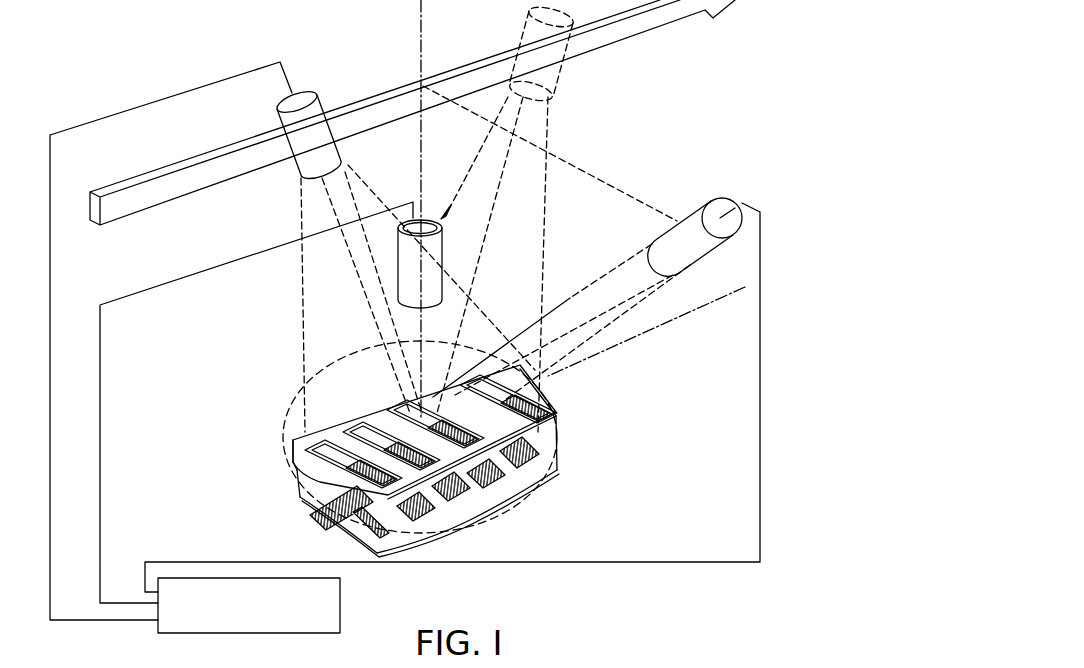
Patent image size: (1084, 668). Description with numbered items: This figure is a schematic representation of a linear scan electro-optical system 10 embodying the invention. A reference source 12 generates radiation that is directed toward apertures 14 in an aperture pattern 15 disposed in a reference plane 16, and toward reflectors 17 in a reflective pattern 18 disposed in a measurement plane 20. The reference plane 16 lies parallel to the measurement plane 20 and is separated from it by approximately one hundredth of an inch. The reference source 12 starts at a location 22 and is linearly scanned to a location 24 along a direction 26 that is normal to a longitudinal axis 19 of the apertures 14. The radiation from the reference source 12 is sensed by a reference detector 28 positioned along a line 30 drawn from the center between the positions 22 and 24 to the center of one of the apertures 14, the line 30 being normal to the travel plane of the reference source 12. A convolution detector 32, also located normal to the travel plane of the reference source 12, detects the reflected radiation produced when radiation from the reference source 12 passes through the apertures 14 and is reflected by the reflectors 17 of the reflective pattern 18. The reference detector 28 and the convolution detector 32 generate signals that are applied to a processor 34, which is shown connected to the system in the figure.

The linear scan electro-optical system 10 is at (718, 99).
The reference source 12 is at (284, 116).
The apertures 14 is at (371, 420).
The aperture pattern 15 is at (346, 399).
The reference plane 16 is at (288, 461).
The reflectors 17 is at (350, 538).
The reflective pattern 18 is at (290, 483).
The longitudinal axis 19 is at (302, 432).
The measurement plane 20 is at (277, 538).
The location 22 is at (281, 170).
The location 24 is at (515, 25).
The direction 26 is at (637, 28).
The reference detector 28 is at (428, 262).
The line 30 is at (421, 157).
The convolution detector 32 is at (696, 252).
The processor 34 is at (342, 606).